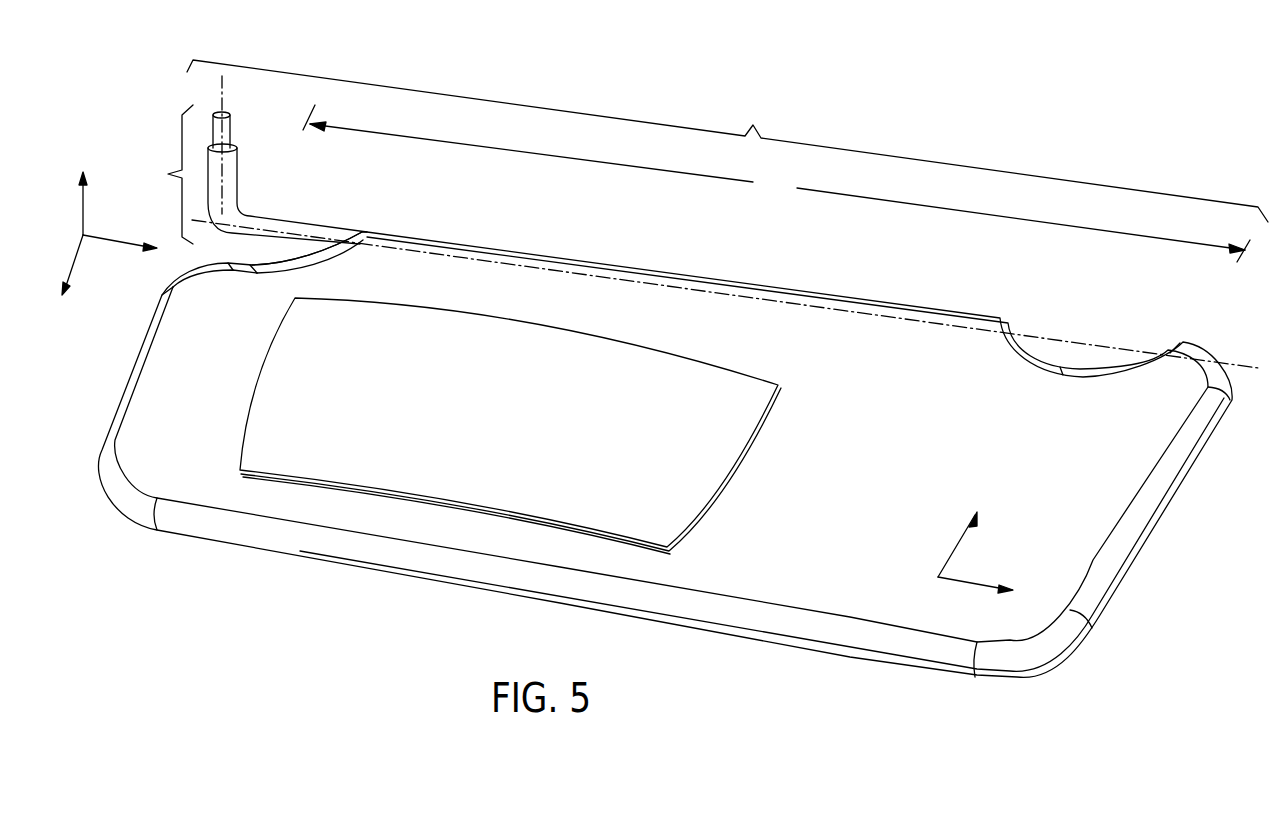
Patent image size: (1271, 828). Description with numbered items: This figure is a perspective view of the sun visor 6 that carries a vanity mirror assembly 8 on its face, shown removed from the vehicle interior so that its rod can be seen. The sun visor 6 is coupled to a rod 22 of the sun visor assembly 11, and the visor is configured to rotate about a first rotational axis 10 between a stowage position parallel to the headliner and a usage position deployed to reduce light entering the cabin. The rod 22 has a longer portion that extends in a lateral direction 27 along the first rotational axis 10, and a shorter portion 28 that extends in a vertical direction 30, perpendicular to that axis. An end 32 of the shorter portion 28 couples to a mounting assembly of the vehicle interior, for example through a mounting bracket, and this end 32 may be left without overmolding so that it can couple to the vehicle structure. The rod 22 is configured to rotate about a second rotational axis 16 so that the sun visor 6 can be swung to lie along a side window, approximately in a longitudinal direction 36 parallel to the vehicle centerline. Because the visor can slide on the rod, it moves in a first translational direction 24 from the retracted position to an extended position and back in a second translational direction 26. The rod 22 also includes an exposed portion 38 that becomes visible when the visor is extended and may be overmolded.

The sun visor 6 is at (614, 252).
The vanity mirror assembly 8 is at (246, 374).
The first rotational axis 10 is at (262, 231).
The sun visor assembly 11 is at (727, 141).
The second rotational axis 16 is at (224, 98).
The rod 22 is at (346, 227).
The first translational direction 24 is at (970, 583).
The second translational direction 26 is at (953, 547).
The lateral direction 27 is at (118, 243).
The shorter portion 28 is at (164, 174).
The vertical direction 30 is at (84, 200).
The end 32 is at (231, 131).
The longitudinal direction 36 is at (71, 261).
The exposed portion 38 is at (307, 221).